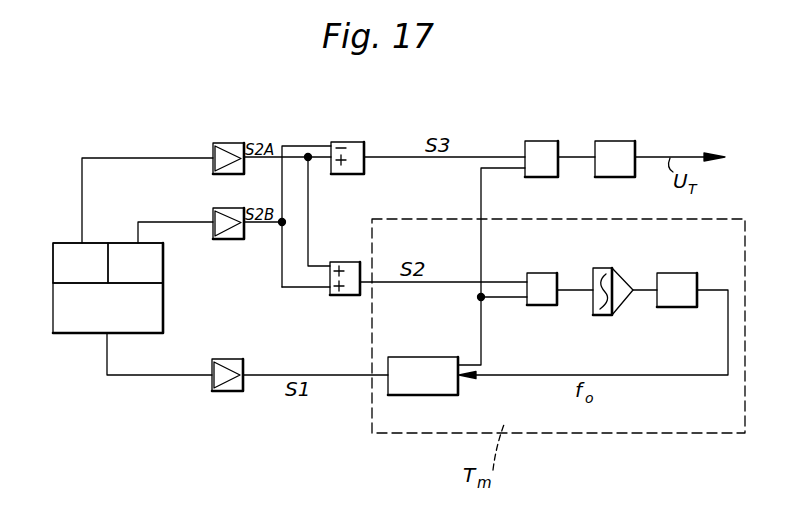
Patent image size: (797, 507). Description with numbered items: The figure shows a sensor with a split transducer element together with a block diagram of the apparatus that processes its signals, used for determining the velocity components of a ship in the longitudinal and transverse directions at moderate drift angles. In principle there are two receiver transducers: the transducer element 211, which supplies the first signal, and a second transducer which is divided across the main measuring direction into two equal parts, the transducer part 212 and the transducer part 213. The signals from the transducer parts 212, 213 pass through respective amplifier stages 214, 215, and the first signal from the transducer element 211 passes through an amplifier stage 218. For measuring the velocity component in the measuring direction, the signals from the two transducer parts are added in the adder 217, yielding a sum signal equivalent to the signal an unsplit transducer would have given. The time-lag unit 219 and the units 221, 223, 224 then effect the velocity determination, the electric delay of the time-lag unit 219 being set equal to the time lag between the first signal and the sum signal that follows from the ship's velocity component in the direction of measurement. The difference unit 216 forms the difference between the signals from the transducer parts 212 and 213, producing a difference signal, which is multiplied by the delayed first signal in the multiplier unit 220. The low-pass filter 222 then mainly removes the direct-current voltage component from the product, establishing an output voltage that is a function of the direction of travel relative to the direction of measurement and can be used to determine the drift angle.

The transducer element 211 is at (87, 322).
The transducer part M2A 212 is at (70, 243).
The transducer part M2B 213 is at (155, 278).
The amplifier for signal S2A 214 is at (218, 147).
The amplifier for signal S2B 215 is at (234, 240).
The difference unit 216 is at (357, 150).
The adder 217 is at (355, 290).
The amplifier for signal S1 218 is at (234, 391).
The time-lag unit 219 is at (437, 383).
The multiplier unit 220 is at (550, 147).
The velocity determination unit 221 is at (548, 273).
The low-pass filter 222 is at (612, 145).
The velocity determination unit 223 is at (618, 276).
The velocity determination unit 224 is at (675, 273).